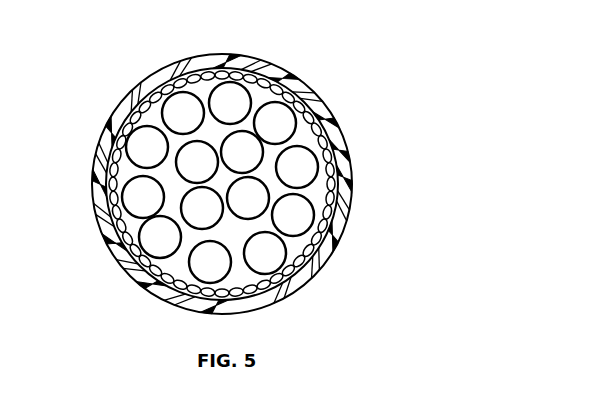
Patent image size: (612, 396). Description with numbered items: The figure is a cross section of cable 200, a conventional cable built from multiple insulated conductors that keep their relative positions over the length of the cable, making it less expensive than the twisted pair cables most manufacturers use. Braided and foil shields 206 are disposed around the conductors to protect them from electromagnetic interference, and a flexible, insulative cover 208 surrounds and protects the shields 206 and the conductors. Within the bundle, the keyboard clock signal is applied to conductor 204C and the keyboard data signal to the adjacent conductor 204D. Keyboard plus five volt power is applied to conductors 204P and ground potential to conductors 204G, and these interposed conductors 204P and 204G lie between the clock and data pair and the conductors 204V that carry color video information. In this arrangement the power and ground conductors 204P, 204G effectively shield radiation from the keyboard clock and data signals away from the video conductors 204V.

The cable 200 is at (380, 247).
The keyboard clock conductor 204C is at (251, 78).
The keyboard data conductor 204D is at (306, 115).
The ground conductors 204G is at (142, 100).
The power conductors 204P is at (345, 172).
The video conductors 204V is at (290, 247).
The braided and foil shields 206 is at (305, 280).
The flexible insulative cover 208 is at (222, 159).